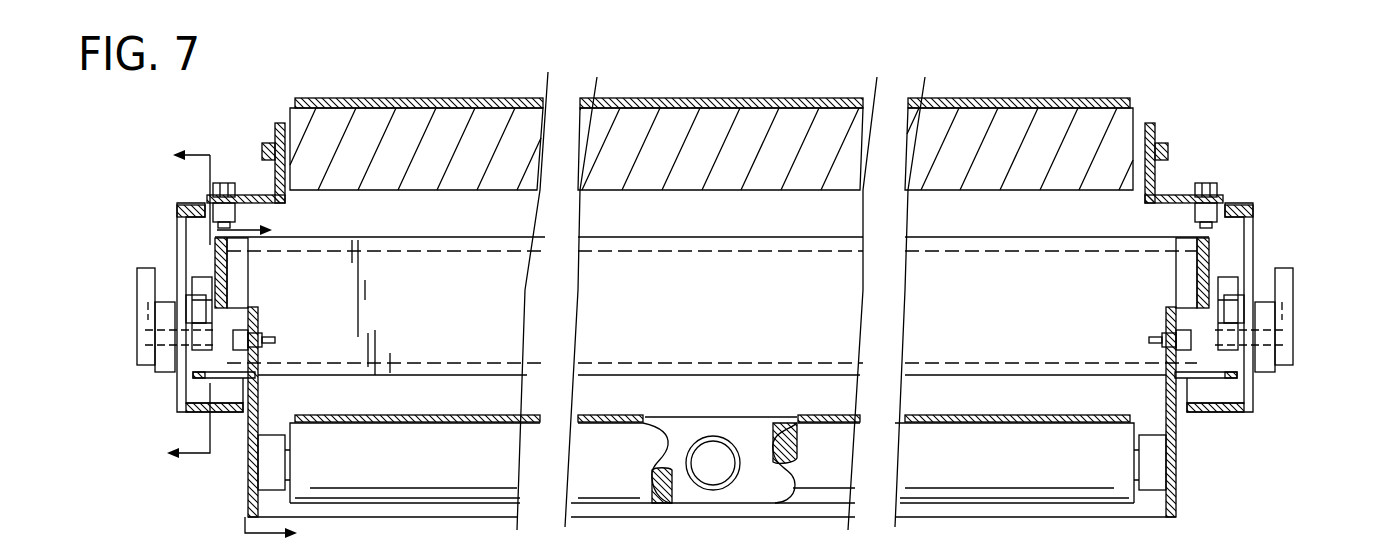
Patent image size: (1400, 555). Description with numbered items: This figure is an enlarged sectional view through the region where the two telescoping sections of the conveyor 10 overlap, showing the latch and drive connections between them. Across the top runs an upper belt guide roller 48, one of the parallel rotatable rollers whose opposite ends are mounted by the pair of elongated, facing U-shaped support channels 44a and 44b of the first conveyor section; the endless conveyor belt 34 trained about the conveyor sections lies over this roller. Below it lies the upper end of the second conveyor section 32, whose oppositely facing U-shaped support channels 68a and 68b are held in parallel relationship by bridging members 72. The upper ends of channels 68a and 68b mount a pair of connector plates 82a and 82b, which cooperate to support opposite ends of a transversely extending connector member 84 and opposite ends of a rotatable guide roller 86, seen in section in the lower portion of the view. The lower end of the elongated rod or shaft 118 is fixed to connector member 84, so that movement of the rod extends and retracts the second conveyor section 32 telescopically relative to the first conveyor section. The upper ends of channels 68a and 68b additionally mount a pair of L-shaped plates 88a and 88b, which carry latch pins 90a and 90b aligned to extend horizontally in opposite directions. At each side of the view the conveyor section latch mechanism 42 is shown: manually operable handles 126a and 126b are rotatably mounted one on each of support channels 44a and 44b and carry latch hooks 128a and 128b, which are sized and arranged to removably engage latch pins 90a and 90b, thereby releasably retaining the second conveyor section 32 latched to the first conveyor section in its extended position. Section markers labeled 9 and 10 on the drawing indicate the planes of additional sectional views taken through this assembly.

The second conveyor section 32 is at (711, 111).
The endless conveyor belt 34 is at (668, 98).
The upper belt guide roller 48 is at (712, 159).
The bridging member 72 is at (482, 237).
The U-shaped support channel 44a is at (178, 203).
The U-shaped support channel 44b is at (1247, 203).
The conveyor section latch mechanism 42 is at (166, 212).
The latch hook 128a is at (188, 272).
The latch hook 128b is at (1242, 280).
The latch pin 90a is at (186, 298).
The latch pin 90b is at (1246, 302).
The manually operable handle 126a is at (140, 285).
The manually operable handle 126b is at (1293, 293).
The U-shaped support channel 68a is at (197, 380).
The U-shaped support channel 68b is at (1213, 380).
The L-shaped plate 88a is at (228, 268).
The L-shaped plate 88b is at (1197, 275).
The connector plate 82a is at (260, 393).
The connector plate 82b is at (1167, 390).
The connector member 84 is at (373, 518).
The rotatable guide roller 86 is at (622, 478).
The rod 118 is at (727, 490).
The section line 9- 9 is at (191, 308).
The section line 10- 10 is at (278, 383).